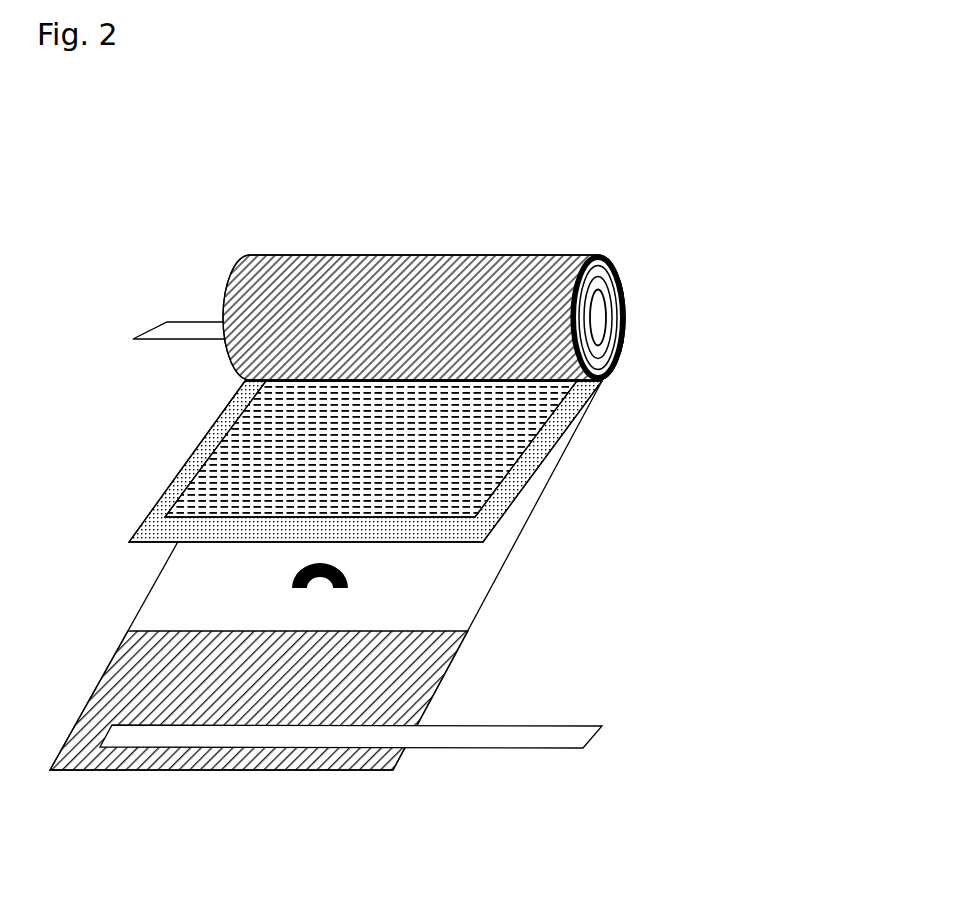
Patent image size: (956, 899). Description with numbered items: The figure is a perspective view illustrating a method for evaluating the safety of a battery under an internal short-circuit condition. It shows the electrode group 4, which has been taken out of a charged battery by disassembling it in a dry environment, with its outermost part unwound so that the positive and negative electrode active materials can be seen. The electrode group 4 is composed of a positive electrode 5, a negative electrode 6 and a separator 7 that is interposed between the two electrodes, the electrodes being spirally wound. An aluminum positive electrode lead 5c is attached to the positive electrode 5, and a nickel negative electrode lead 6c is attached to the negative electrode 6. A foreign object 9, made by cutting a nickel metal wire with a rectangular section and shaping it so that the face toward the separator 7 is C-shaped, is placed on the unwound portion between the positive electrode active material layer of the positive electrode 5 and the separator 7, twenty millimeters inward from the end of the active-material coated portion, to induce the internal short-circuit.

The electrode group 4 is at (626, 305).
The positive electrode 5 is at (462, 460).
The positive electrode lead 5c is at (175, 332).
The negative electrode 6 is at (455, 665).
The negative electrode lead 6c is at (465, 737).
The separator 7 is at (487, 530).
The foreign object 9 is at (292, 575).